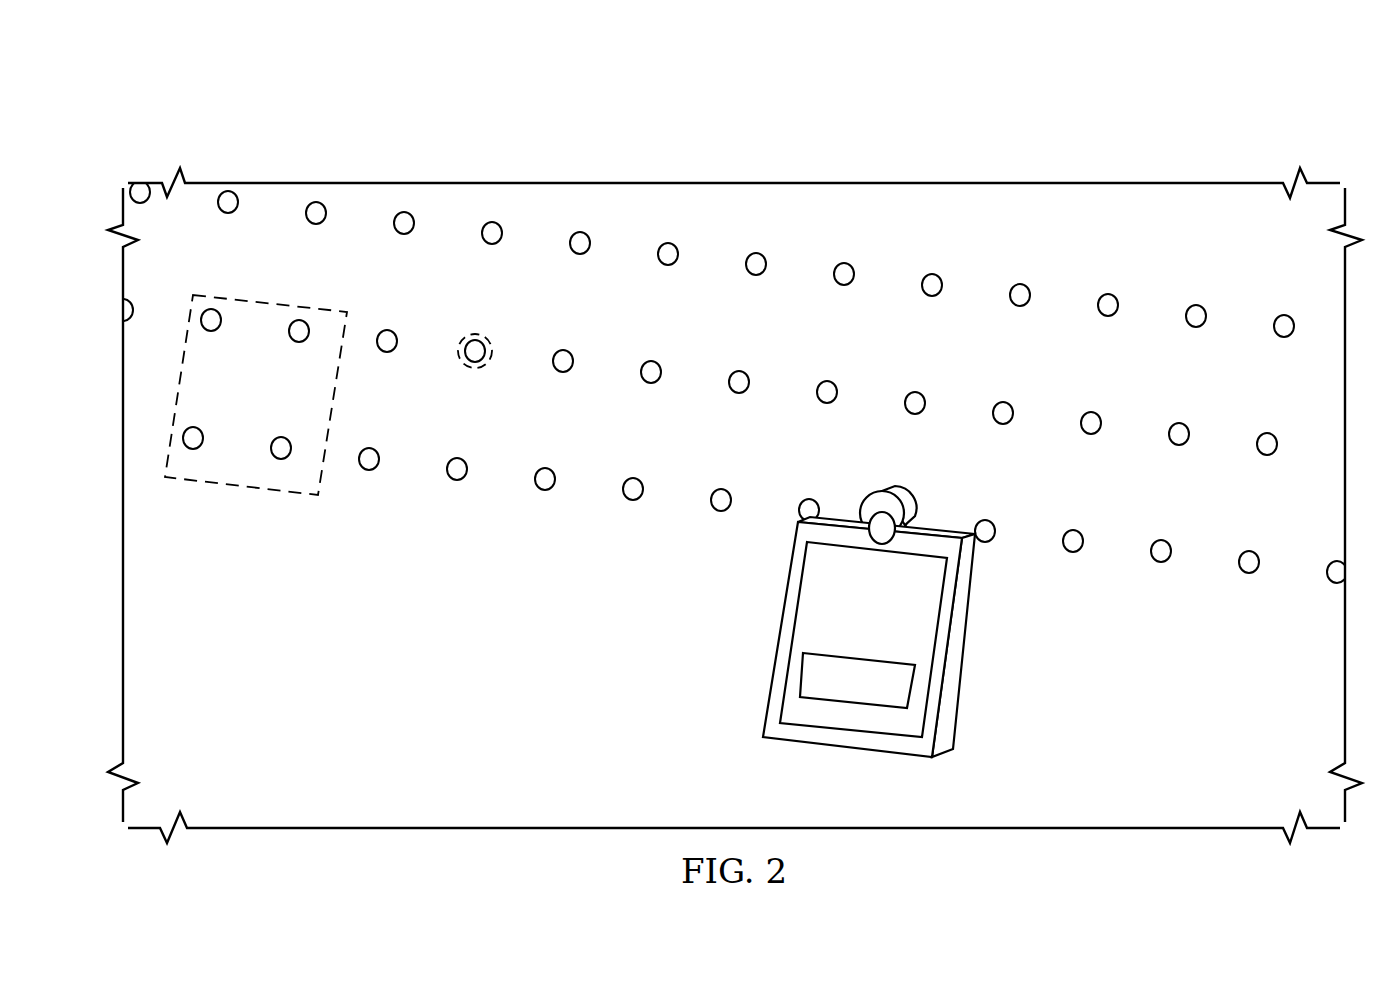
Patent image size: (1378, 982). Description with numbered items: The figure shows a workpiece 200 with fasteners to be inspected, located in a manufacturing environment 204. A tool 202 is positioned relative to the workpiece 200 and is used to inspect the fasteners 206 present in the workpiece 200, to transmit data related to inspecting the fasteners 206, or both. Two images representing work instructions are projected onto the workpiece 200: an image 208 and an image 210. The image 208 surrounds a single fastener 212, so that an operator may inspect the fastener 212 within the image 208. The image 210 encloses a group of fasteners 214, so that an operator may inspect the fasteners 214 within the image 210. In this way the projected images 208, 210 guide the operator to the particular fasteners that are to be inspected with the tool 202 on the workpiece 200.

The workpiece 200 is at (752, 192).
The tool 202 is at (878, 486).
The manufacturing environment 204 is at (286, 91).
The fasteners 206 is at (638, 341).
The image 208 is at (470, 335).
The image 210 is at (252, 488).
The fastener 212 is at (490, 337).
The fasteners 214 is at (284, 302).